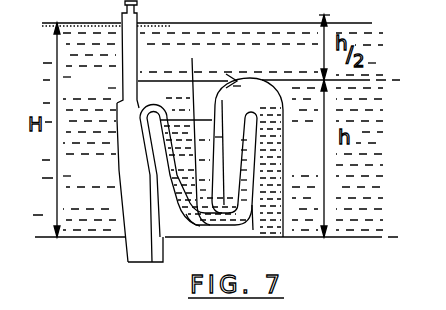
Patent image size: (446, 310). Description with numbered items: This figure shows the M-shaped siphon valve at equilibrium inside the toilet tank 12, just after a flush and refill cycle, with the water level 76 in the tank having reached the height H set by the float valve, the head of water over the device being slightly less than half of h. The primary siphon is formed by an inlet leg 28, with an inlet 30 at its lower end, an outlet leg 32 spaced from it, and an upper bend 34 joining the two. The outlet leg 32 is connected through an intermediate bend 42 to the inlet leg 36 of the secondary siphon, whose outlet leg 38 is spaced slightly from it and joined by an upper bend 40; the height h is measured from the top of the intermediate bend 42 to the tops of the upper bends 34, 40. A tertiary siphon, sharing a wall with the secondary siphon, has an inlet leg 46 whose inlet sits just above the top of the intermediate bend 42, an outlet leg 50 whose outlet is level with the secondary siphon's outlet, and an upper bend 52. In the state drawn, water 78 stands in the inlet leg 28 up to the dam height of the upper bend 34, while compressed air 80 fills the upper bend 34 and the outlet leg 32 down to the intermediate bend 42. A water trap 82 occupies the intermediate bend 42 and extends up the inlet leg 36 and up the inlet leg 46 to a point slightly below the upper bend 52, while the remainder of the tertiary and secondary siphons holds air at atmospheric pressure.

The tank 12 is at (347, 239).
The inlet leg 28 is at (281, 118).
The inlet 30 is at (261, 216).
The outlet leg 32 is at (176, 163).
The upper bend 34 is at (267, 88).
The inlet leg 36 is at (161, 117).
The outlet leg 38 is at (118, 164).
The upper bend 40 is at (120, 99).
The intermediate bend 42 is at (200, 226).
The inlet leg 46 is at (167, 164).
The outlet leg 50 is at (150, 262).
The upper bend 52 is at (148, 102).
The water level 76 is at (372, 23).
The water 78 is at (273, 204).
The compressed air 80 is at (250, 80).
The water trap 82 is at (189, 227).